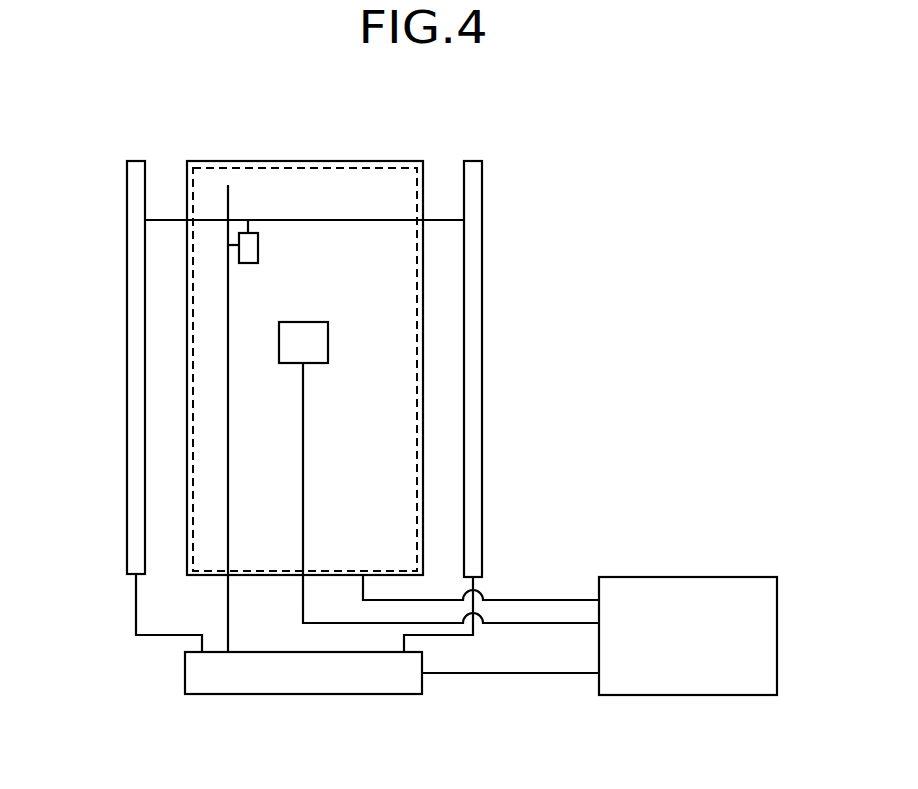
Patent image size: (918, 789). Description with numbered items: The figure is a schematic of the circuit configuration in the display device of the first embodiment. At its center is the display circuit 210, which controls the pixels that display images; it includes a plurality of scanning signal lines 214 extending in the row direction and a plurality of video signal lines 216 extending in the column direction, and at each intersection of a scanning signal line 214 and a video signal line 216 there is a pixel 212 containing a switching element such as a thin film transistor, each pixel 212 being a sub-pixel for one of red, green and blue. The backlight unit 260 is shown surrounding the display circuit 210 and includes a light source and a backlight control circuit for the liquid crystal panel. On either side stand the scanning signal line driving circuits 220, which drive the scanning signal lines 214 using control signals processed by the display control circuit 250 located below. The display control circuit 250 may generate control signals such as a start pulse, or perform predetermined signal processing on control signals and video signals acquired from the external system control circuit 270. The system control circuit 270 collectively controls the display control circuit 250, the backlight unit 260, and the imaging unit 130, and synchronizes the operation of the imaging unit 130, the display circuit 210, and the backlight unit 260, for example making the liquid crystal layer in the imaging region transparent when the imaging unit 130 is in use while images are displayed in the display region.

The imaging unit 130 is at (322, 334).
The display circuit 210 is at (315, 162).
The pixel 212 is at (249, 248).
The scanning signal line 214 is at (389, 219).
The video signal line 216 is at (228, 348).
The scanning signal line driving circuit 220 is at (133, 481).
The display control circuit 250 is at (190, 673).
The backlight unit 260 is at (233, 168).
The system control circuit 270 is at (687, 588).